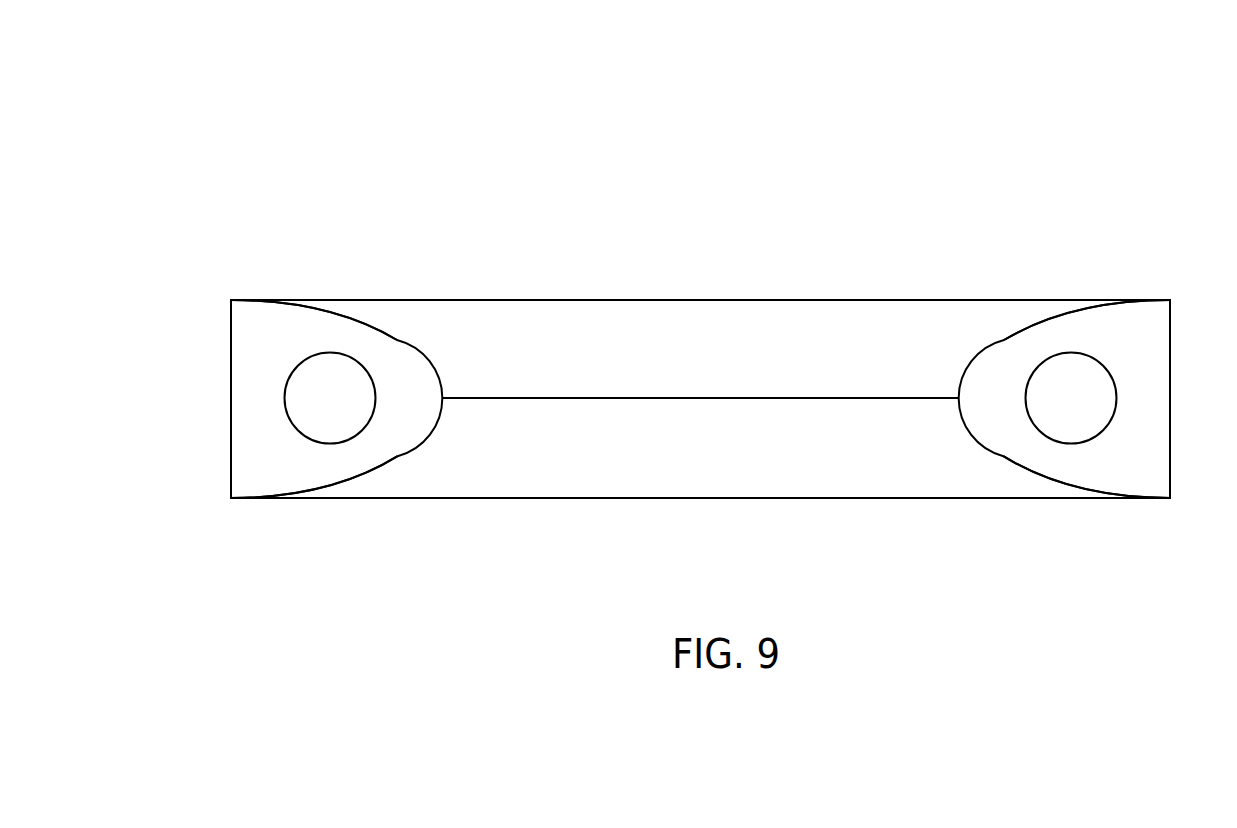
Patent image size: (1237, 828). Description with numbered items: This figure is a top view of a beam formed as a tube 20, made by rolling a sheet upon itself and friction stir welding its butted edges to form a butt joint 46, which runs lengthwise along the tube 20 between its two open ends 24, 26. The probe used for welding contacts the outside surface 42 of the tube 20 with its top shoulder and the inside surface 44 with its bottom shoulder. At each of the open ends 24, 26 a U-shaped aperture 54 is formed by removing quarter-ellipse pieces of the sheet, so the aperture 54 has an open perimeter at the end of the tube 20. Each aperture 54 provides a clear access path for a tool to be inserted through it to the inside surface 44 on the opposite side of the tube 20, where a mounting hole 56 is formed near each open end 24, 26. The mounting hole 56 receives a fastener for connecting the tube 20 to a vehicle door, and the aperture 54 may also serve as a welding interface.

The tube 20 is at (957, 116).
The open end 24 is at (1172, 320).
The open end 26 is at (233, 478).
The outside surface 42 is at (698, 484).
The inside surface 44 is at (243, 339).
The butt joint 46 is at (573, 397).
The U-shaped aperture 54 is at (398, 336).
The mounting hole 56 is at (312, 409).